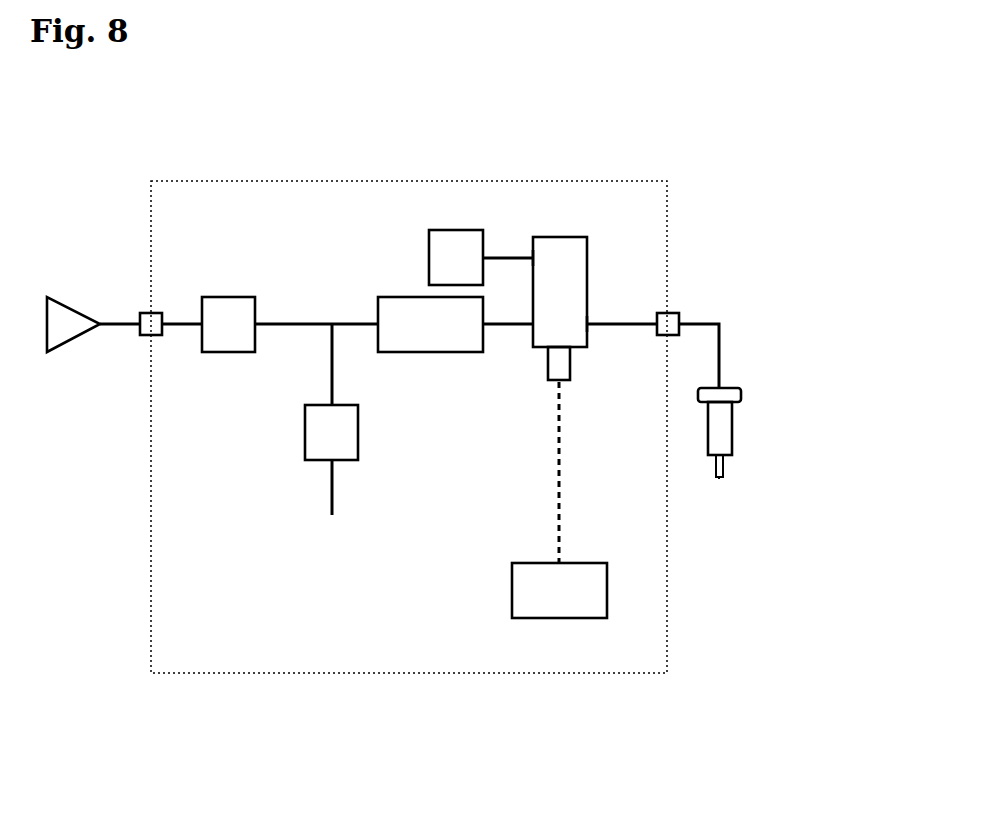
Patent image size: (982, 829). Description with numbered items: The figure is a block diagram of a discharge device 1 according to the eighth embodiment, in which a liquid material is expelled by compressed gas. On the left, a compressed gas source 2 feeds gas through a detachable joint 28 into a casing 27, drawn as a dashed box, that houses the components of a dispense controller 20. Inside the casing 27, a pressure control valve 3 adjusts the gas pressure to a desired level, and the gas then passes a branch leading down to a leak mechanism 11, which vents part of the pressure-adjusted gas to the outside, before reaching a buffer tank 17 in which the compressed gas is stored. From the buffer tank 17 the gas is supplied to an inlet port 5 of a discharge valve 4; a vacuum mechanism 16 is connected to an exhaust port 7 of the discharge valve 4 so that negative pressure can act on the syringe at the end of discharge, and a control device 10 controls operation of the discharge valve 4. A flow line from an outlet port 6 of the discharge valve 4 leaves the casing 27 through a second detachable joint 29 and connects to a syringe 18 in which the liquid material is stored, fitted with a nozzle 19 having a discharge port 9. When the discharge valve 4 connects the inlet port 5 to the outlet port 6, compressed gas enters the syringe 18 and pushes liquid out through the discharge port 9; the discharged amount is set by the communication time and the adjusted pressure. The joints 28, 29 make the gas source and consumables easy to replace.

The discharge device 1 is at (822, 582).
The compressed gas source 2 is at (83, 280).
The pressure control valve 3 is at (233, 285).
The discharge valve 4 is at (568, 233).
The inlet port 5 is at (537, 374).
The outlet port 6 is at (610, 299).
The exhaust port 7 is at (511, 231).
The discharge port 9 is at (735, 528).
The control device 10 is at (509, 590).
The leak mechanism 11 is at (285, 432).
The vacuum mechanism 16 is at (466, 202).
The buffer tank 17 is at (417, 285).
The syringe 18 is at (764, 428).
The nozzle 19 is at (762, 488).
The dispense controller 20 is at (236, 745).
The casing 27 is at (409, 474).
The joint 28 is at (128, 373).
The joint 29 is at (693, 290).